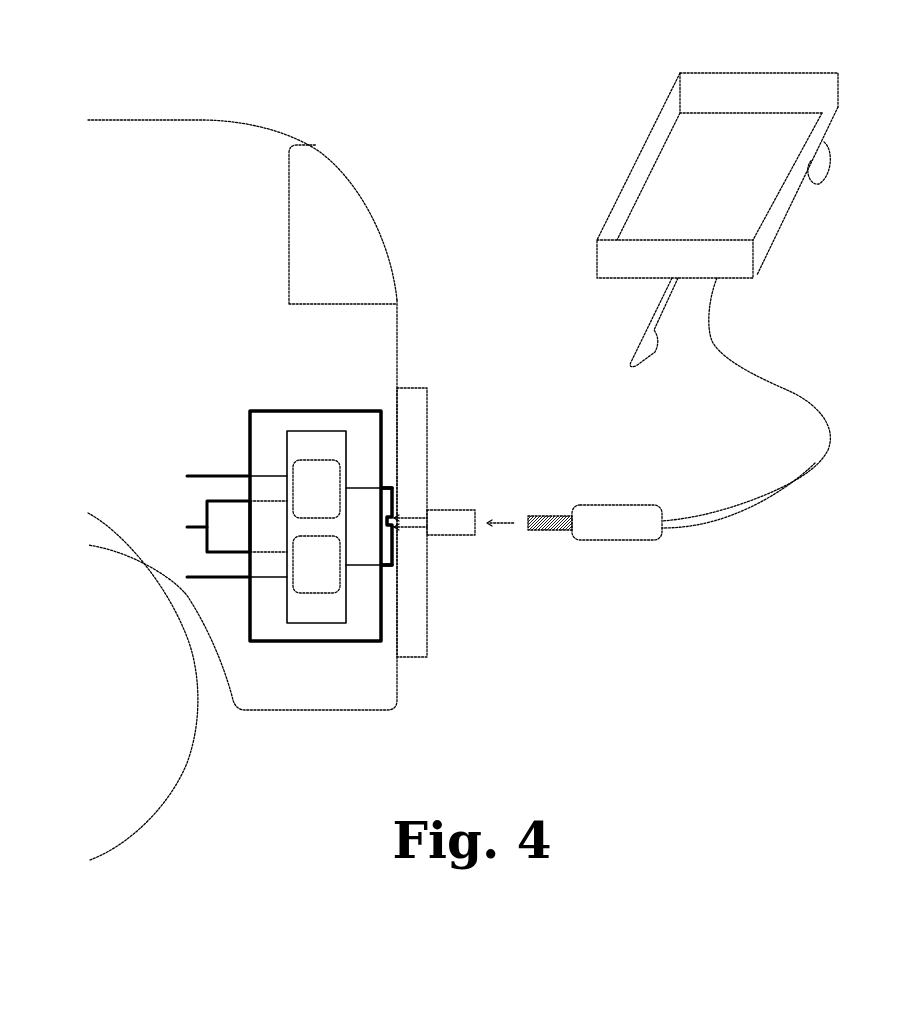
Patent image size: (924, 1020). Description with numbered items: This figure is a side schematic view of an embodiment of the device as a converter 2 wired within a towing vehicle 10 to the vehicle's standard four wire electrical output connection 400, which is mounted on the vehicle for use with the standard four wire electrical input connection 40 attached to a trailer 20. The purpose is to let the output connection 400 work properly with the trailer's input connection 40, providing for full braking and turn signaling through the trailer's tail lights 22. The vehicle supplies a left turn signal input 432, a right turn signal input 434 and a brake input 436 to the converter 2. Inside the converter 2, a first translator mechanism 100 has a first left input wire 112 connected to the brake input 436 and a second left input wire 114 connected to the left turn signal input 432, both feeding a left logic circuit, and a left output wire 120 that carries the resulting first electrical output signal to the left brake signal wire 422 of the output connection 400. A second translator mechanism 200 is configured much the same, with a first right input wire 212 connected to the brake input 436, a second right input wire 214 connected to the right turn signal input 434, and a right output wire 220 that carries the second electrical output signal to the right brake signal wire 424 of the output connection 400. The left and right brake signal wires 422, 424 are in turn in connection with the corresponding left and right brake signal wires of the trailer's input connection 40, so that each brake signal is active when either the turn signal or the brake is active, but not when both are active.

The towing vehicle 10 is at (257, 128).
The trailer 20 is at (630, 168).
The tail lights 22 is at (840, 102).
The converter 2 is at (237, 443).
The first translator mechanism 100 is at (316, 460).
The first left input wire 112 is at (275, 500).
The second left input wire 114 is at (265, 467).
The left output wire 120 is at (365, 487).
The second translator mechanism 200 is at (317, 595).
The first right input wire 212 is at (276, 556).
The second right input wire 214 is at (262, 582).
The right output wire 220 is at (356, 575).
The standard four wire electrical output connection 400 is at (455, 510).
The left brake signal wire 422 is at (384, 486).
The right brake signal wire 424 is at (384, 568).
The left turn signal input 432 is at (208, 475).
The right turn signal input 434 is at (192, 595).
The brake input 436 is at (195, 522).
The standard four wire electrical input connection 40 is at (633, 505).